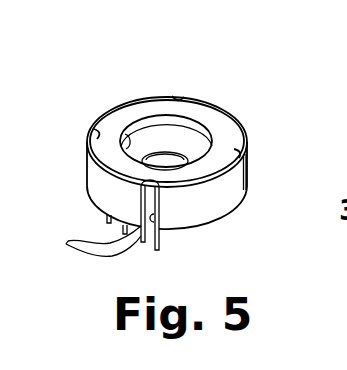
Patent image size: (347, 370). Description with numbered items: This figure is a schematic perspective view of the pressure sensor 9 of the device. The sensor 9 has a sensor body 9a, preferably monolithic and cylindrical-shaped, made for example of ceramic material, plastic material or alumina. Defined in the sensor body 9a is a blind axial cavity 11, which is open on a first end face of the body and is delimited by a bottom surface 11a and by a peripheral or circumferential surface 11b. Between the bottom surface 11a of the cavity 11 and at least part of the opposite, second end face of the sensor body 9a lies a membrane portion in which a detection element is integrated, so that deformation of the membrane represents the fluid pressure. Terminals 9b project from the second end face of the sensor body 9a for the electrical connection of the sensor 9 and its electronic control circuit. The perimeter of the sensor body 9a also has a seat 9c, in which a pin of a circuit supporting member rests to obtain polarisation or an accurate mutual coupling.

The sensor 9 is at (181, 150).
The sensor body 9a is at (239, 214).
The terminals 9b is at (86, 251).
The perimeter seat 9c is at (158, 226).
The blind axial cavity 11 is at (181, 131).
The bottom surface 11a is at (182, 164).
The peripheral or circumferential surface 11b is at (127, 146).